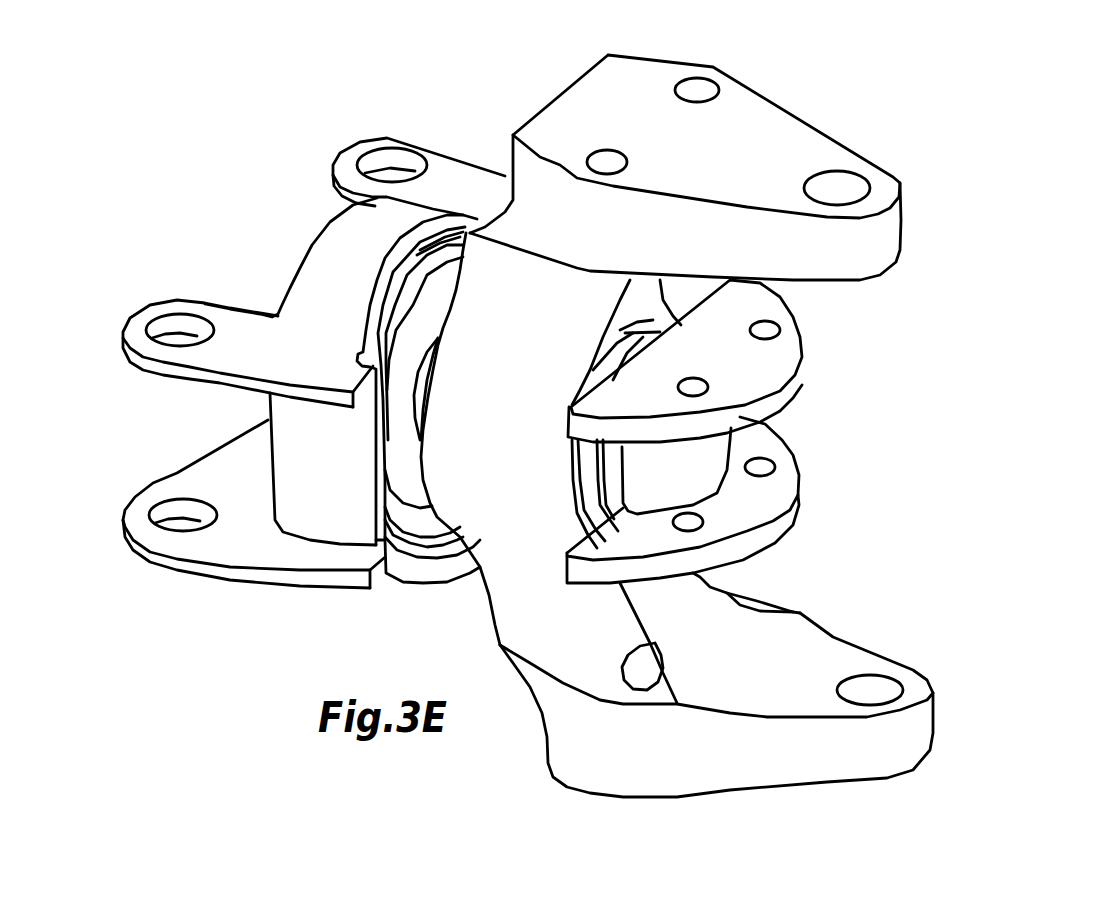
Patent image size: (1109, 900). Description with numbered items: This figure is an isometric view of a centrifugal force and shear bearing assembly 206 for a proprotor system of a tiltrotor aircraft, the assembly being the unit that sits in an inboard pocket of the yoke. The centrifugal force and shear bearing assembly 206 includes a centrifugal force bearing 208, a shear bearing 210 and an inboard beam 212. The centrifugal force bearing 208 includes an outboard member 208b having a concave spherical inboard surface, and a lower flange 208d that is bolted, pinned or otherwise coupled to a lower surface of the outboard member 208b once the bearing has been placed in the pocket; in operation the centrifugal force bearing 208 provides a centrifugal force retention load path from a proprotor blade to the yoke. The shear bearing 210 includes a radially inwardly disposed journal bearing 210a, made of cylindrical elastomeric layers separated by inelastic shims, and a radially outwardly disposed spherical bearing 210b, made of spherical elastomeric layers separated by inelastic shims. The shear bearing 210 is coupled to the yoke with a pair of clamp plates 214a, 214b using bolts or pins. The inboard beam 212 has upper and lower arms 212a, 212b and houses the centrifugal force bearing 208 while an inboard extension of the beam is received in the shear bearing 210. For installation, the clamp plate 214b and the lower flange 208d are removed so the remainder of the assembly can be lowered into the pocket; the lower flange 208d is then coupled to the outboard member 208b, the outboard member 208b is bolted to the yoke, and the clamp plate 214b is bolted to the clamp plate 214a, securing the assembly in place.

The centrifugal force and shear bearing assembly 206 is at (287, 364).
The centrifugal force bearing 208 is at (662, 468).
The outboard member 208b is at (751, 471).
The lower flange 208d is at (729, 500).
The shear bearing 210 is at (396, 388).
The journal bearing 210a is at (395, 450).
The spherical bearing 210b is at (390, 453).
The inboard beam 212 is at (700, 156).
The upper arm 212a is at (867, 148).
The lower arm 212b is at (725, 697).
The clamp plate 214a is at (221, 353).
The clamp plate 214b is at (227, 505).